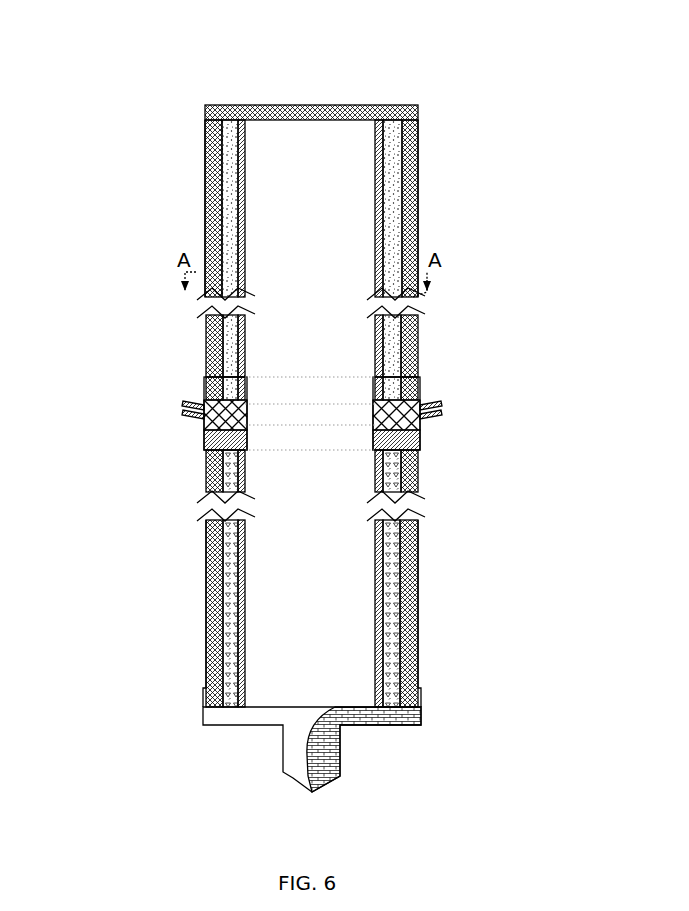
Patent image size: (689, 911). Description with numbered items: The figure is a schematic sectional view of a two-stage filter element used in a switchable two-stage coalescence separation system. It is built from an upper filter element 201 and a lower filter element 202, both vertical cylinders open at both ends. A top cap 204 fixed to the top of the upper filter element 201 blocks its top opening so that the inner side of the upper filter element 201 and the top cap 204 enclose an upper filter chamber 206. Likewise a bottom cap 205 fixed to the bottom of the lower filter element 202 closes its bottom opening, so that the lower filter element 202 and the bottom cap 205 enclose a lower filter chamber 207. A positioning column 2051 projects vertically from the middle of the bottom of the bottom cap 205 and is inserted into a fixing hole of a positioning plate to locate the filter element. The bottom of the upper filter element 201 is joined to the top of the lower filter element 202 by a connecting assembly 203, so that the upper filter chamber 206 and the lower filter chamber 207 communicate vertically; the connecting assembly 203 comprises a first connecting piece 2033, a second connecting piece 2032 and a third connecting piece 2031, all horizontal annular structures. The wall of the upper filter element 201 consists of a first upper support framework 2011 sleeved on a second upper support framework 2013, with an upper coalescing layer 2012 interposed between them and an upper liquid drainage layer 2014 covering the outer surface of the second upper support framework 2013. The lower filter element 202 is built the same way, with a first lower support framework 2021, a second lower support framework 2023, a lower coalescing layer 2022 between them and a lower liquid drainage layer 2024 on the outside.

The upper filter element 201 is at (319, 237).
The lower filter element 202 is at (317, 578).
The connecting assembly 203 is at (304, 393).
The top cap 204 is at (322, 108).
The bottom cap 205 is at (327, 774).
The upper filter chamber 206 is at (278, 165).
The lower filter chamber 207 is at (300, 632).
The first upper support framework 2011 is at (415, 232).
The upper coalescing layer 2012 is at (413, 200).
The second upper support framework 2013 is at (415, 183).
The upper liquid drainage layer 2014 is at (415, 165).
The first lower support framework 2021 is at (418, 638).
The lower coalescing layer 2022 is at (418, 607).
The second lower support framework 2023 is at (418, 578).
The lower liquid drainage layer 2024 is at (418, 560).
The third connecting piece 2031 is at (417, 397).
The second connecting piece 2032 is at (420, 410).
The first connecting piece 2033 is at (417, 437).
The positioning column 2051 is at (340, 757).